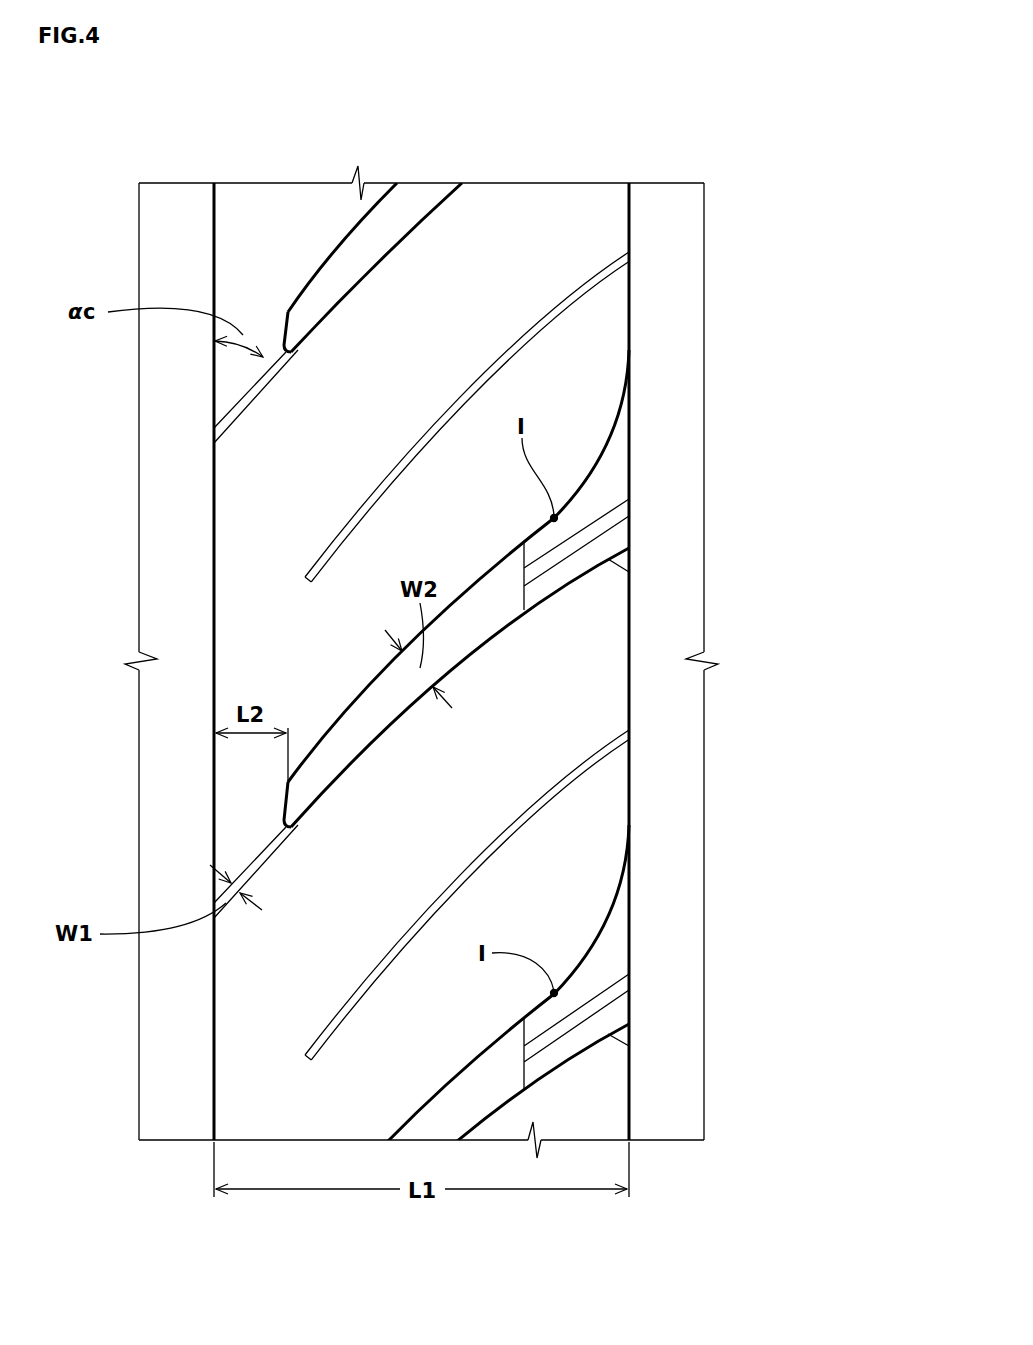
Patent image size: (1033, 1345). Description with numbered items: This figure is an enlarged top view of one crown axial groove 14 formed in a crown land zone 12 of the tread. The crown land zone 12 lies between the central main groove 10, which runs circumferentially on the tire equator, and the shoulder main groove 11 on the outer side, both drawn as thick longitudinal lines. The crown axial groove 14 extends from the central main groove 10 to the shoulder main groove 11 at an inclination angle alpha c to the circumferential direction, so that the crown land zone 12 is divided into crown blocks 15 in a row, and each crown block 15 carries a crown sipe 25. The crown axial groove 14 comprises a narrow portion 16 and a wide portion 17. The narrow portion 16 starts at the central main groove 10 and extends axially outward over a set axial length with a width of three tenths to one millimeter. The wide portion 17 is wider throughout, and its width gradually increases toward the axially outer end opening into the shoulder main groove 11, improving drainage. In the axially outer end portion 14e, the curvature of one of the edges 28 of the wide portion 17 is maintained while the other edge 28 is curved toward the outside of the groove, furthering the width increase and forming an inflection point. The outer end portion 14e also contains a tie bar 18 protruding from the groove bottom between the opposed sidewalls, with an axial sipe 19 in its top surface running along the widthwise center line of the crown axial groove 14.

The central main groove 10 is at (182, 210).
The shoulder main groove 11 is at (668, 208).
The crown land zone 12 is at (521, 213).
The crown axial groove 14 is at (524, 718).
The axially outer end portion 14e is at (589, 576).
The crown block 15 is at (290, 425).
The narrow portion 16 is at (255, 868).
The wide portion 17 is at (378, 700).
The tie bar 18 is at (614, 481).
The axial sipe 19 is at (590, 532).
The crown sipe 25 is at (540, 315).
The edge 28 is at (605, 448).